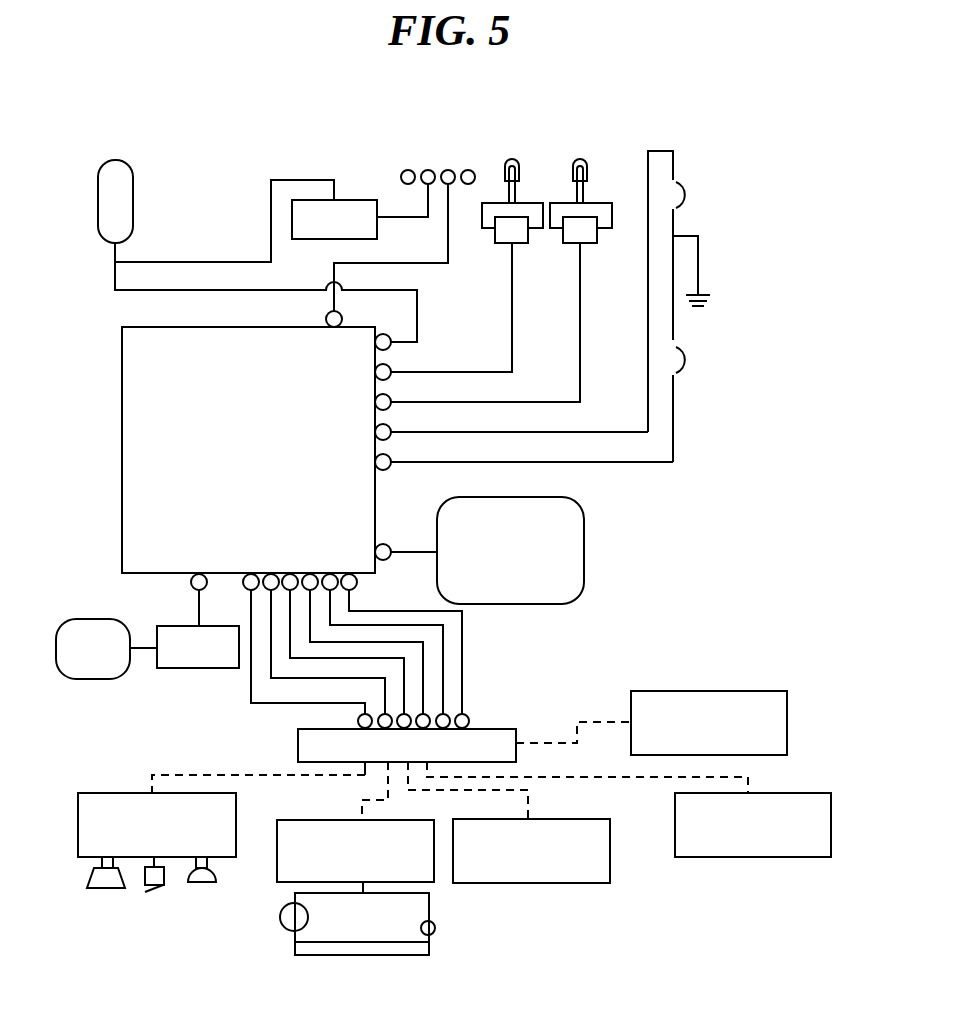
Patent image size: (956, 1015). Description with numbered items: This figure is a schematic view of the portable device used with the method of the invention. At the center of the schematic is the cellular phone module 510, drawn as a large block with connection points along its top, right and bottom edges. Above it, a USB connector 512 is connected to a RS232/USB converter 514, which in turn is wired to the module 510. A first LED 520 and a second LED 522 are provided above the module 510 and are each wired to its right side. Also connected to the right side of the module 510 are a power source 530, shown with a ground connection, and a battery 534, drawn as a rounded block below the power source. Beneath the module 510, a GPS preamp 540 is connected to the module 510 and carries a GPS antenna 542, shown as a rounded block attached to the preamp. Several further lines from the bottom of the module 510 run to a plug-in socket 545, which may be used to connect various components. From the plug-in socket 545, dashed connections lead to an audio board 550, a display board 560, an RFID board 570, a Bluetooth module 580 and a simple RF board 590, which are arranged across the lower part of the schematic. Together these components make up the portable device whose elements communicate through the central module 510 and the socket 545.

The cellular phone module 510 is at (122, 410).
The USB connector 512 is at (133, 178).
The RS232/USB converter 514 is at (358, 200).
The first LED 520 is at (512, 155).
The second LED 522 is at (580, 155).
The power source 530 is at (688, 234).
The battery 534 is at (584, 550).
The GPS preamp 540 is at (172, 668).
The GPS antenna 542 is at (87, 680).
The plug-in socket 545 is at (490, 728).
The audio board 550 is at (100, 792).
The display board 560 is at (277, 867).
The RFID board 570 is at (515, 883).
The Bluetooth module 580 is at (748, 857).
The simple RF board 590 is at (693, 691).